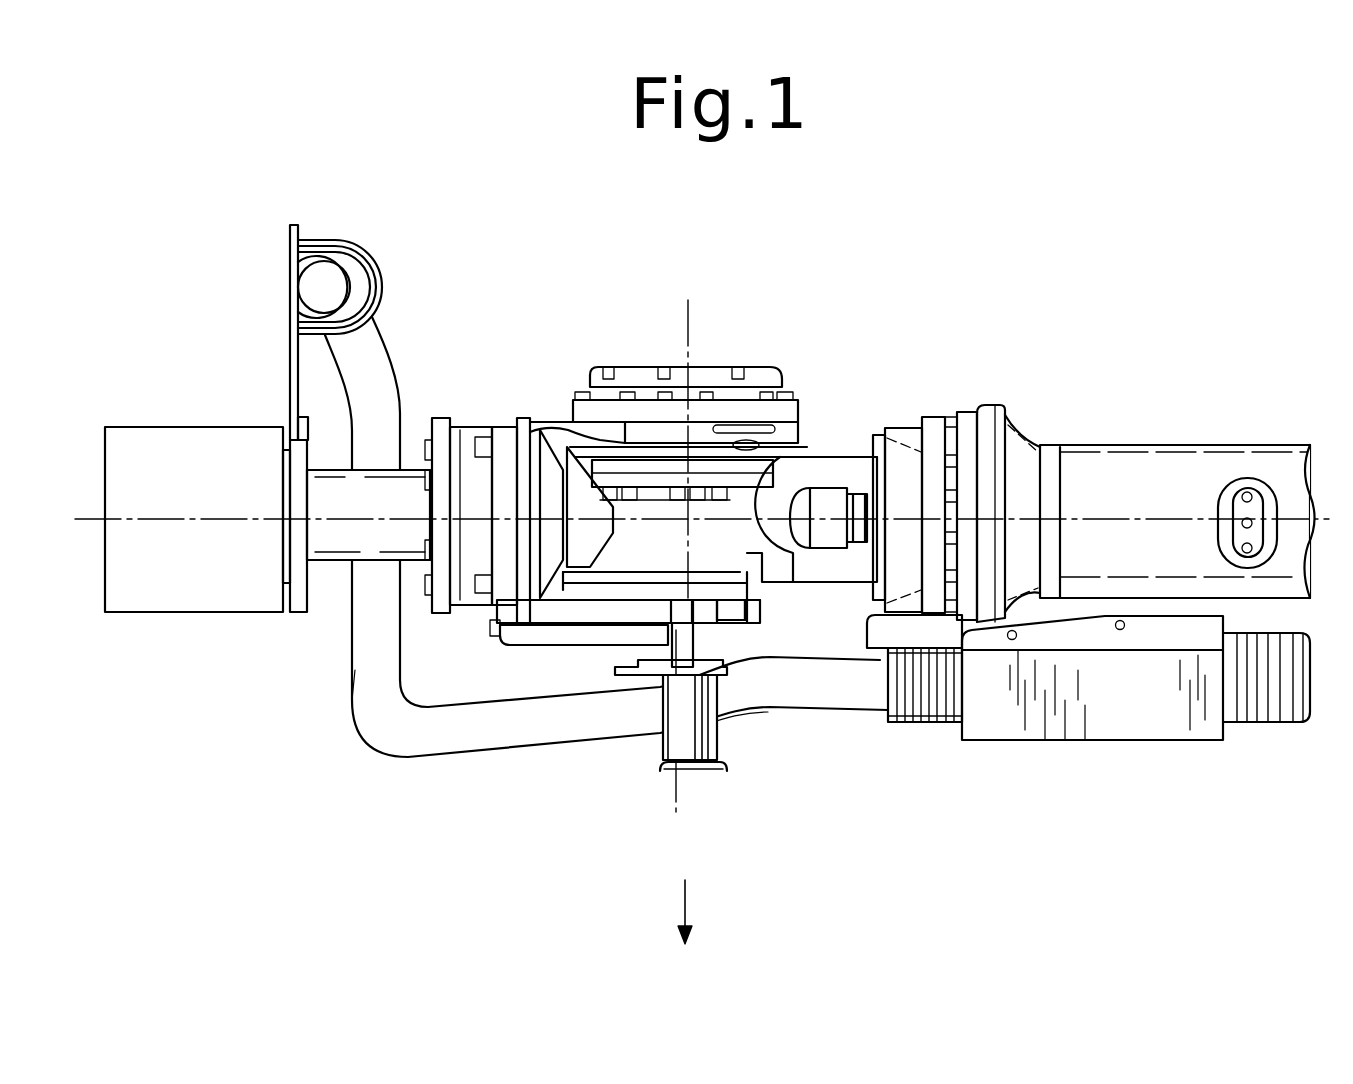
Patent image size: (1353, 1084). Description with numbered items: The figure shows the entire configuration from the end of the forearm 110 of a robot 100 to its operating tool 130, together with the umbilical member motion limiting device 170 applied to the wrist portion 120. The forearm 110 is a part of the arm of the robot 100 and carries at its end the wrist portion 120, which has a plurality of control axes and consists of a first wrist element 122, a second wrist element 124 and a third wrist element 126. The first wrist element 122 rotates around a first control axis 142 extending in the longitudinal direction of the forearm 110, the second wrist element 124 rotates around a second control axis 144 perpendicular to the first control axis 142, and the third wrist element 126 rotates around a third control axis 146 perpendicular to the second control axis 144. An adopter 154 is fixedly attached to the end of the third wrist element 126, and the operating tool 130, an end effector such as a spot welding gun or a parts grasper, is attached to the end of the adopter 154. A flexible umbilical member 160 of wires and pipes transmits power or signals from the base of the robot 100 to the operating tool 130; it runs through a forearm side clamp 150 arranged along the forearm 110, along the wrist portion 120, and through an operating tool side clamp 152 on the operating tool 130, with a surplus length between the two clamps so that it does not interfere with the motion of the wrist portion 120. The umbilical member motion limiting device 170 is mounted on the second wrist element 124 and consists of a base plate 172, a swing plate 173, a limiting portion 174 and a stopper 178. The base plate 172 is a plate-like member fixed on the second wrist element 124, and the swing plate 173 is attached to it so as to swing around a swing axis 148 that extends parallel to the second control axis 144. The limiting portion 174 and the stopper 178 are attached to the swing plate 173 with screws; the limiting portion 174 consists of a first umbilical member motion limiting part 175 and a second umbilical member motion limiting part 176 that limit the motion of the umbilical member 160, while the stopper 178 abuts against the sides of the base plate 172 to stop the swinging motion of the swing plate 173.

The robot 100 is at (922, 316).
The forearm 110 is at (1100, 445).
The wrist portion 120 is at (882, 288).
The first wrist element 122 is at (784, 452).
The second wrist element 124 is at (750, 440).
The third wrist element 126 is at (480, 423).
The operating tool 130 is at (152, 427).
The first control axis 142 is at (1148, 525).
The second control axis 144 is at (690, 372).
The third control axis 146 is at (185, 520).
The swing axis 148 is at (672, 790).
The forearm side clamp 150 is at (1120, 742).
The operating tool side clamp 152 is at (355, 240).
The adopter 154 is at (341, 577).
The umbilical member 160 is at (792, 725).
The umbilical member motion limiting device 170 is at (650, 803).
The base plate 172 is at (757, 652).
The swing plate 173 is at (606, 670).
The limiting portion 174 is at (537, 768).
The first umbilical member motion limiting part 175 is at (660, 758).
The second umbilical member motion limiting part 176 is at (658, 772).
The stopper 178 is at (695, 630).